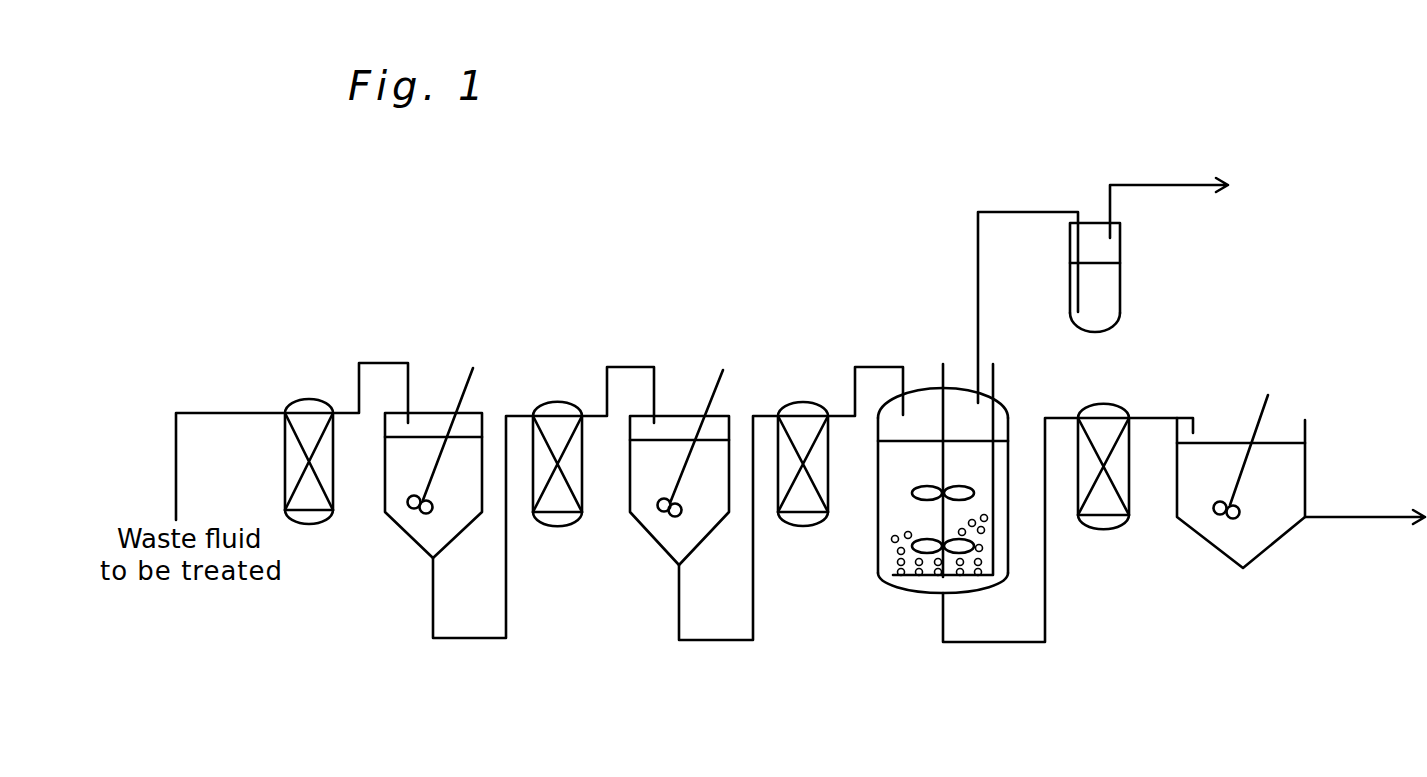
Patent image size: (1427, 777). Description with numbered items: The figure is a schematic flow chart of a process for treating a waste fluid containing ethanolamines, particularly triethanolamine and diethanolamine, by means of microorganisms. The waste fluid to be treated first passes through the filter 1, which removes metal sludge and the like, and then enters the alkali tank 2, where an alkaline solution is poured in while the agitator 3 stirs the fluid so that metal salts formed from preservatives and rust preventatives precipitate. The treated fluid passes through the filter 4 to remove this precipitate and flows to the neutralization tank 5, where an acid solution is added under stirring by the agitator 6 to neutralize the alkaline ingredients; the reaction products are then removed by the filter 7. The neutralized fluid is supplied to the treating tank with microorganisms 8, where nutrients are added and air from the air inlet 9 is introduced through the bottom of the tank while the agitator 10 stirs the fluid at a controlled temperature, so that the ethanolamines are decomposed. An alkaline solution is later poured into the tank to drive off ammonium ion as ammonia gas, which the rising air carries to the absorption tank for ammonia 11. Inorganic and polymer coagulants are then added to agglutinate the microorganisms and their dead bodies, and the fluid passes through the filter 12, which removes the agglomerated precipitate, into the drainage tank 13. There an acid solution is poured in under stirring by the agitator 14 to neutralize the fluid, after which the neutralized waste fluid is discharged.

The filter 1 is at (304, 417).
The alkali tank 2 is at (425, 535).
The agitator 3 is at (463, 398).
The filter 4 is at (549, 425).
The neutralization tank 5 is at (682, 528).
The agitator 6 is at (715, 395).
The filter 7 is at (797, 435).
The treating tank with microorganisms 8 is at (916, 583).
The air inlet 9 is at (1005, 420).
The agitator 10 is at (940, 380).
The absorption tank for ammonia 11 is at (1103, 298).
The filter 12 is at (1110, 503).
The drainage tank 13 is at (1253, 527).
The agitator 14 is at (1268, 415).